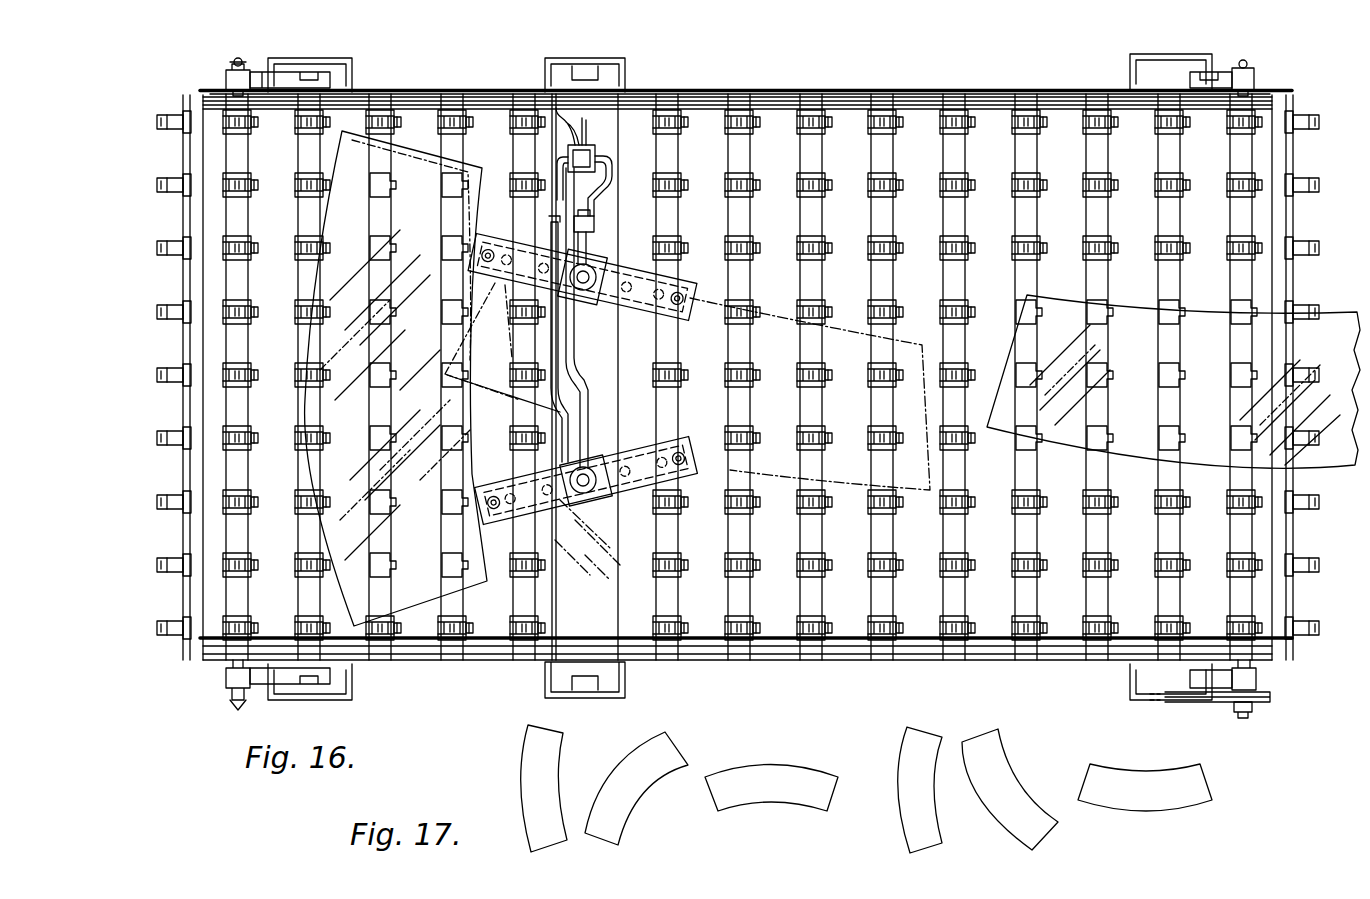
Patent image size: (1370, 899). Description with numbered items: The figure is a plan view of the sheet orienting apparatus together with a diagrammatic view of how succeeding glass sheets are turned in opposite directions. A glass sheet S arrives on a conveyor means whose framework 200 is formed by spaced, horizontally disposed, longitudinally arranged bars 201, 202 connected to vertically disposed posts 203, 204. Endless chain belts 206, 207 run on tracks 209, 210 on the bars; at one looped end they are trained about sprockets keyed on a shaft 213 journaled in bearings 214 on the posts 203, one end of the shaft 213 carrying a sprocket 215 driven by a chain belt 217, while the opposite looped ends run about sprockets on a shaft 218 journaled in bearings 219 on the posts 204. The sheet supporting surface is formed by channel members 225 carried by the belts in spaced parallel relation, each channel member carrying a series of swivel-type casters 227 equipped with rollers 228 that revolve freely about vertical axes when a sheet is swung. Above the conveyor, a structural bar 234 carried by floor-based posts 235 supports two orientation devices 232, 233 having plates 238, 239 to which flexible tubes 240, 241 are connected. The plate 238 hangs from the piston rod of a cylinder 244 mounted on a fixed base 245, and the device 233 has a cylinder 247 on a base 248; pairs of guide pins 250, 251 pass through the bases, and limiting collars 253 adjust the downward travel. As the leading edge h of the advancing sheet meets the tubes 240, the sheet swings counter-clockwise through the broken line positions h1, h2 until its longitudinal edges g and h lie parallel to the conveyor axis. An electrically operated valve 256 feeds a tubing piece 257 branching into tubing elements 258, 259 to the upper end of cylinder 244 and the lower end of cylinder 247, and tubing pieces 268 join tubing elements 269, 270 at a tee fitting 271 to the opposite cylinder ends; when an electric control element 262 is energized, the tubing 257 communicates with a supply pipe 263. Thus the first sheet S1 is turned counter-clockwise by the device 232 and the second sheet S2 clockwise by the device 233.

In FIG. 16, the framework 200 is at (702, 77).
In FIG. 16, the bar 201 is at (850, 88).
In FIG. 16, the bar 202 is at (910, 660).
In FIG. 16, the post 203 is at (352, 72).
In FIG. 16, the post 204 is at (352, 680).
In FIG. 16, the endless chain belt 206 is at (968, 100).
In FIG. 16, the endless chain belt 207 is at (782, 658).
In FIG. 16, the track 209 is at (770, 88).
In FIG. 16, the track 210 is at (845, 660).
In FIG. 16, the shaft 213 is at (1243, 62).
In FIG. 16, the bearing 214 is at (1256, 86).
In FIG. 16, the sprocket 215 is at (1255, 706).
In FIG. 16, the chain belt 217 is at (1205, 702).
In FIG. 16, the shaft 218 is at (242, 62).
In FIG. 16, the bearing 219 is at (228, 76).
In FIG. 16, the channel member 225 is at (800, 150).
In FIG. 16, the swivel-type caster 227 is at (810, 248).
In FIG. 16, the roller 228 is at (888, 248).
In FIG. 16, the orientation device 232 is at (680, 275).
In FIG. 16, the orientation device 233 is at (686, 442).
In FIG. 16, the structural bar 234 is at (600, 645).
In FIG. 16, the floor-based post 235 is at (598, 62).
In FIG. 16, the plate 238 is at (686, 352).
In FIG. 16, the plate 239 is at (688, 478).
In FIG. 16, the flexible tube 240 is at (598, 282).
In FIG. 16, the flexible tube 241 is at (624, 445).
In FIG. 16, the cylinder 244 is at (586, 270).
In FIG. 16, the fixed base 245 is at (628, 310).
In FIG. 16, the cylinder 247 is at (578, 502).
In FIG. 16, the base 248 is at (622, 494).
In FIG. 16, the guide pin 250 is at (470, 262).
In FIG. 16, the guide pin 251 is at (490, 496).
In FIG. 16, the limiting collar 253 is at (678, 298).
In FIG. 16, the electrically operated valve 256 is at (586, 142).
In FIG. 16, the tubing piece 257 is at (556, 162).
In FIG. 16, the tubing element 258 is at (558, 218).
In FIG. 16, the tubing element 259 is at (548, 420).
In FIG. 16, the electric control element 262 is at (592, 160).
In FIG. 16, the supply pipe 263 is at (593, 116).
In FIG. 16, the tubing piece 268 is at (608, 184).
In FIG. 16, the tubing element 269 is at (582, 248).
In FIG. 16, the tubing element 270 is at (572, 348).
In FIG. 16, the tee fitting 271 is at (592, 222).
In FIG. 16, the glass sheet S is at (330, 540).
In FIG. 17, the first sheet S1 is at (925, 818).
In FIG. 17, the second sheet S2 is at (548, 752).
In FIG. 16, the longitudinal edge g is at (298, 405).
In FIG. 17, the longitudinal edge g is at (518, 780).
In FIG. 16, the leading edge h is at (470, 445).
In FIG. 17, the leading edge h is at (560, 786).
In FIG. 16, the broken line position h1 is at (482, 341).
In FIG. 16, the broken line position h2 is at (810, 390).